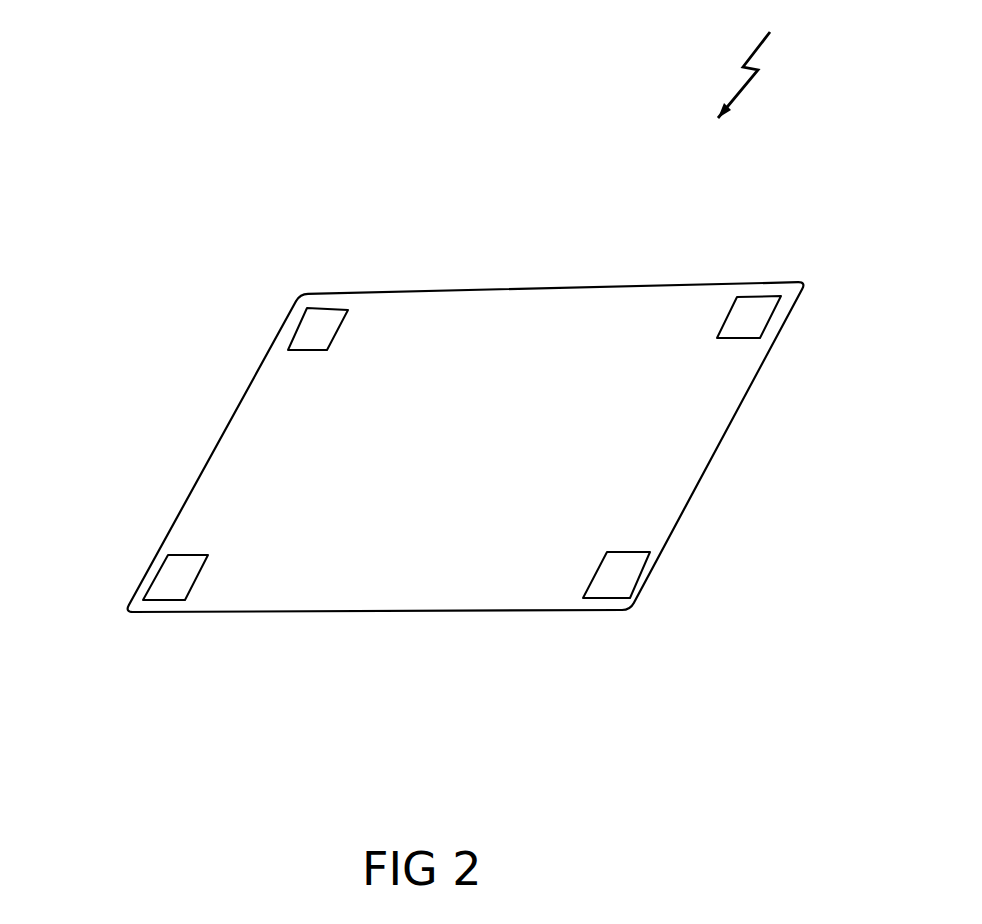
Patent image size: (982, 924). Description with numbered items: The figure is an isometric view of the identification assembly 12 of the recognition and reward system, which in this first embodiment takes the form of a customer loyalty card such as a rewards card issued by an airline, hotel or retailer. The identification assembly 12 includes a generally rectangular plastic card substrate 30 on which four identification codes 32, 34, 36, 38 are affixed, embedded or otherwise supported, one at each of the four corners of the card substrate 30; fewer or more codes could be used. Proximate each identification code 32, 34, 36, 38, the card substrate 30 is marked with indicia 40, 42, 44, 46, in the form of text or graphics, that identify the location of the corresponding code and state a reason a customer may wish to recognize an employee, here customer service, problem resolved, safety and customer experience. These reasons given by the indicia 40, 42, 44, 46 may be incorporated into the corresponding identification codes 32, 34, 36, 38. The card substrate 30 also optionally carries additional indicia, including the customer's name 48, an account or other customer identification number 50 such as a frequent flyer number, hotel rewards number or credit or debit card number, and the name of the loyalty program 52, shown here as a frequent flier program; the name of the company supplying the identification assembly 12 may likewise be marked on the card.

The identification assembly 12 is at (766, 62).
The card substrate 30 is at (530, 285).
The identification code 32 is at (310, 318).
The identification code 34 is at (752, 308).
The identification code 36 is at (617, 572).
The identification code 38 is at (163, 582).
The indicia 40 is at (250, 378).
The indicia 42 is at (747, 382).
The indicia 44 is at (547, 588).
The indicia 46 is at (233, 590).
The customer's name 48 is at (628, 442).
The customer identification number 50 is at (628, 487).
The name of the loyalty program 52 is at (478, 307).